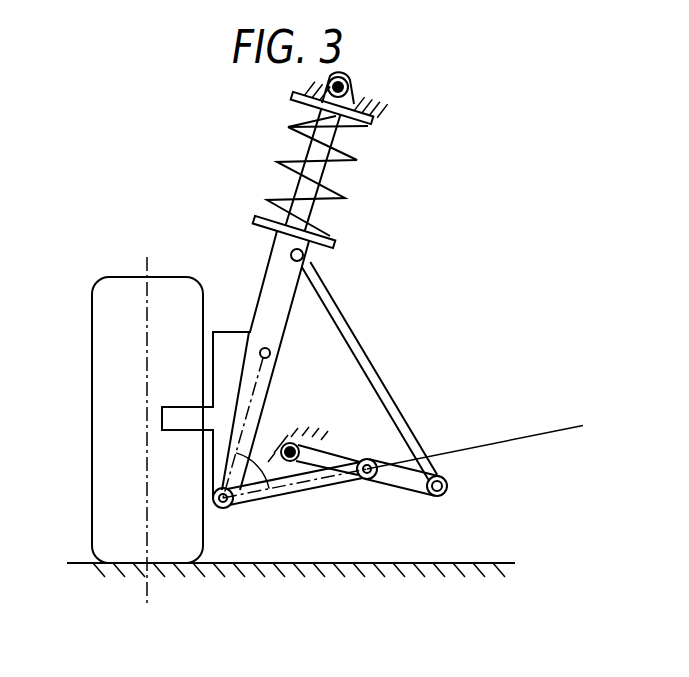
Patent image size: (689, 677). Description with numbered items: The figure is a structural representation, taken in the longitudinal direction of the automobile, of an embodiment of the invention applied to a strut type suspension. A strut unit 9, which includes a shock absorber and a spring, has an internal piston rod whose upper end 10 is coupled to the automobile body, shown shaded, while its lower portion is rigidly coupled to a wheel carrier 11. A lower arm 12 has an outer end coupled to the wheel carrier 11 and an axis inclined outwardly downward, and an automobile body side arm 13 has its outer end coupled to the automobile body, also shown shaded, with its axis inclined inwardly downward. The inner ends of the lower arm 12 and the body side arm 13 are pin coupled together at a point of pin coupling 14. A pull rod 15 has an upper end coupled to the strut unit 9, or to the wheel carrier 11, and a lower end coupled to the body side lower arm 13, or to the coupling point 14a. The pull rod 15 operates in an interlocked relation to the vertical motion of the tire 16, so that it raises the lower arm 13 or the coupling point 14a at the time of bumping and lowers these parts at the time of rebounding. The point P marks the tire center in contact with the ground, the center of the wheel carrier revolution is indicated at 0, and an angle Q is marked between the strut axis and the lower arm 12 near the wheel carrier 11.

The strut unit 9 is at (272, 268).
The upper end of piston rod 10 is at (354, 79).
The wheel carrier 11 is at (220, 377).
The lower arm 12 is at (332, 480).
The automobile body side arm 13 is at (325, 455).
The point of pin coupling 14 is at (380, 481).
The coupling point 14a is at (446, 492).
The pull rod 15 is at (368, 363).
The tire 16 is at (92, 283).
The center of wheel carrier revolution 0 is at (411, 451).
The angle Q is at (280, 488).
The tire center in contact with the ground P is at (145, 446).